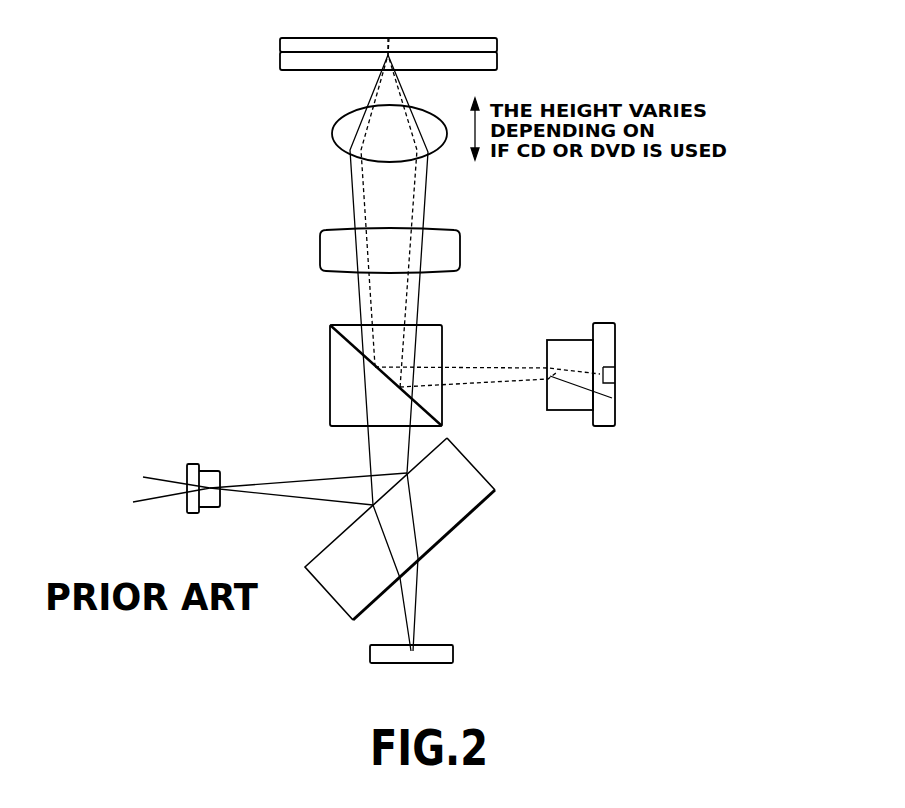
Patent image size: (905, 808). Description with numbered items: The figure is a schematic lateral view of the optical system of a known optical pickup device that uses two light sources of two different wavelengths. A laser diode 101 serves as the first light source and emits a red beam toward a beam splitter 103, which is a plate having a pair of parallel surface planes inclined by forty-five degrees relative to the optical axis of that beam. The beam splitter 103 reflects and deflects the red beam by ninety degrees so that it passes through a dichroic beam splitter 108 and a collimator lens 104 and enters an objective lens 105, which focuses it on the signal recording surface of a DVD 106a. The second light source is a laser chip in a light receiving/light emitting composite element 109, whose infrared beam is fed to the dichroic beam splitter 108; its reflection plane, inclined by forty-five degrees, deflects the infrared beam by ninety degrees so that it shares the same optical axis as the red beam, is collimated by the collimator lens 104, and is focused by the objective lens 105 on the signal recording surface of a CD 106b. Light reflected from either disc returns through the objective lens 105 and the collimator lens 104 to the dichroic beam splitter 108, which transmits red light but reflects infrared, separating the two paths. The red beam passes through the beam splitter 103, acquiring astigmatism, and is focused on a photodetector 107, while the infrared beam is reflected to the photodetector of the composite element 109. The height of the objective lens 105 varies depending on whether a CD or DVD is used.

The laser diode 101 is at (193, 464).
The beam splitter 103 is at (475, 500).
The collimator lens 104 is at (322, 255).
The objective lens 105 is at (337, 125).
The DVD 106a is at (297, 62).
The CD 106b is at (297, 43).
The photodetector 107 is at (455, 652).
The dichroic beam splitter 108 is at (333, 380).
The light receiving/light emitting composite element 109 is at (612, 349).